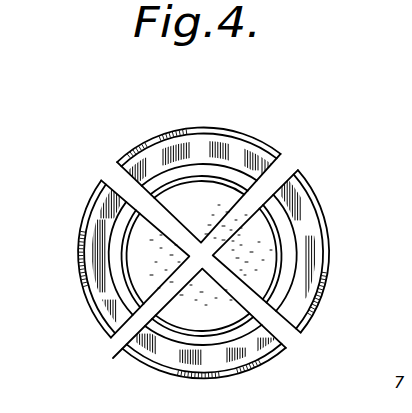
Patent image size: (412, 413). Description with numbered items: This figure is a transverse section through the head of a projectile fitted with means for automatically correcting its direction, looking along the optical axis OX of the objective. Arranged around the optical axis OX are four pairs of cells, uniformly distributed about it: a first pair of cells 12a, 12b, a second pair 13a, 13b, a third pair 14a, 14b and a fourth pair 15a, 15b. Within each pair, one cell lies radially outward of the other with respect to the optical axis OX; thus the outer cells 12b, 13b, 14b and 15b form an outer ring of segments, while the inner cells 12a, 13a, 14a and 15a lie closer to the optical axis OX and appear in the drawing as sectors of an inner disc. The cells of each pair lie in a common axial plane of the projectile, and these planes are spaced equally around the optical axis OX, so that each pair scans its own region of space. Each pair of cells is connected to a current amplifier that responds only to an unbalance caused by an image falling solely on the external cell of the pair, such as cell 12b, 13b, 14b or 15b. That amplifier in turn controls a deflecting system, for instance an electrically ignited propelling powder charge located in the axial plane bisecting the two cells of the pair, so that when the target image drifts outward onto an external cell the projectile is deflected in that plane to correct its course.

The cell 12a is at (140, 237).
The cell 12b is at (84, 252).
The cell 13a is at (218, 200).
The cell 13b is at (222, 152).
The cell 14a is at (260, 233).
The cell 14b is at (310, 249).
The cell 15a is at (228, 305).
The cell 15b is at (205, 361).
The optical axis OX is at (142, 325).